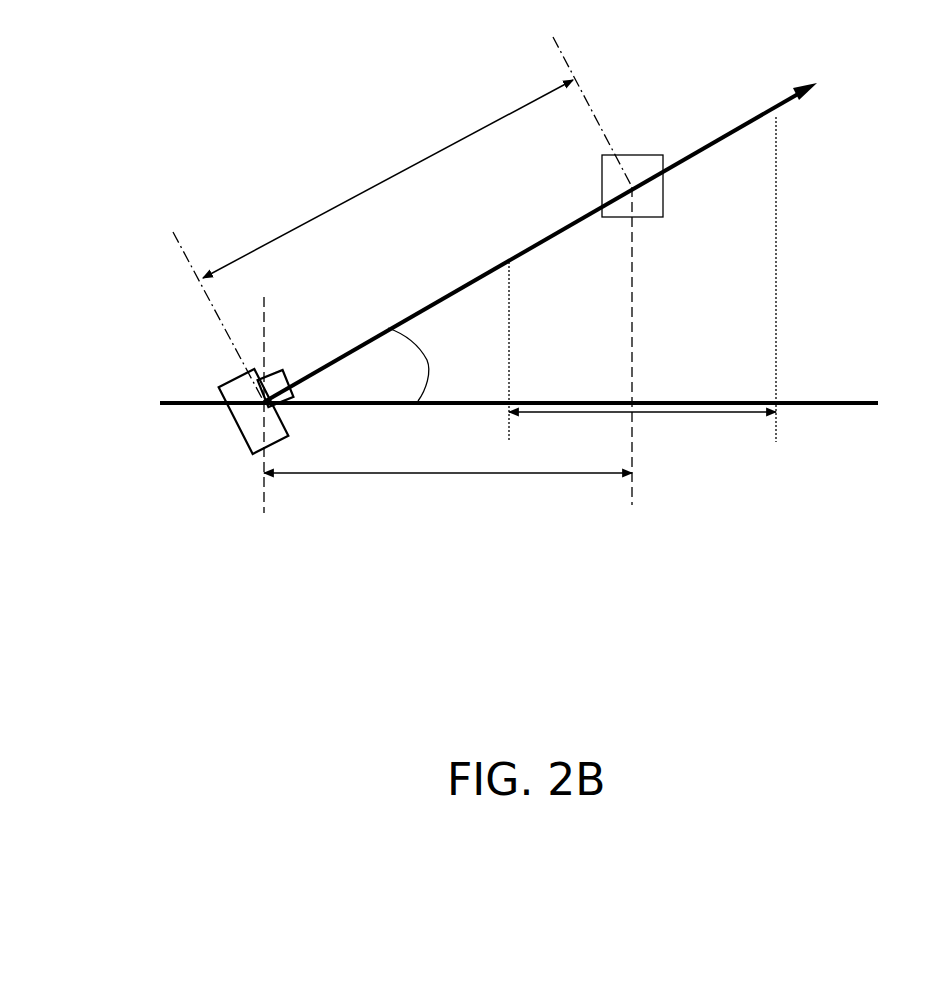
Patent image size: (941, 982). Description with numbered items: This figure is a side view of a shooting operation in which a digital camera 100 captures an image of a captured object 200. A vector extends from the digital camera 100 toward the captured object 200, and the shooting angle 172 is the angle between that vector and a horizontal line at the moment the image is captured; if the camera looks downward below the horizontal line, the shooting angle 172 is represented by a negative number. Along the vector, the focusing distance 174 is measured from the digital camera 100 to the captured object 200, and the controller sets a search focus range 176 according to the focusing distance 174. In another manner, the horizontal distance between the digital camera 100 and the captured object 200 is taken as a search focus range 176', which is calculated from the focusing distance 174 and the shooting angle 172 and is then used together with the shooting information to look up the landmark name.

The digital camera 100 is at (243, 422).
The captured object 200 is at (642, 167).
The shooting angle 172 is at (367, 382).
The focusing distance 174 is at (263, 242).
The search focus range 176 is at (642, 292).
The search focus range 176' is at (448, 358).